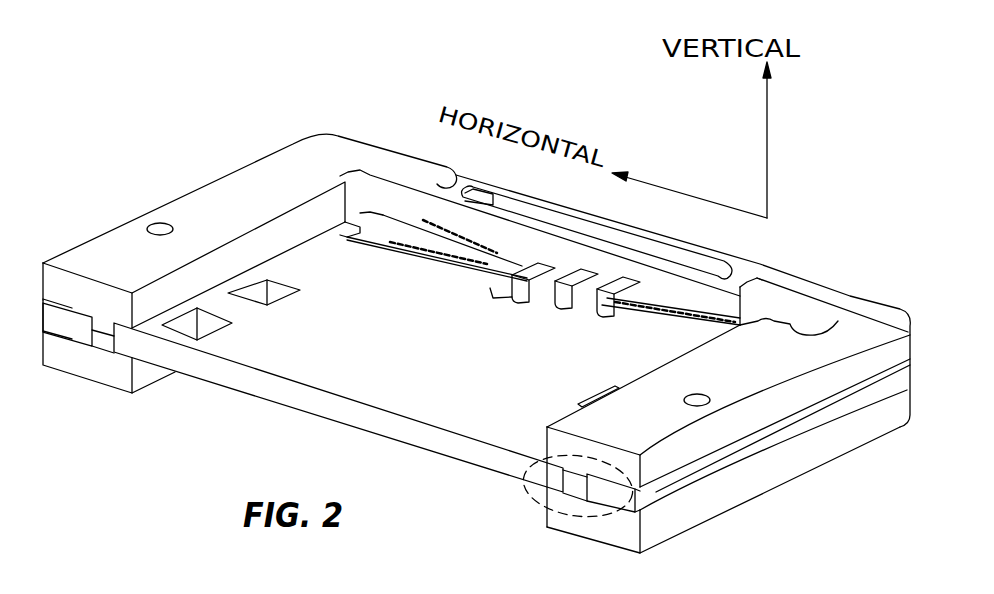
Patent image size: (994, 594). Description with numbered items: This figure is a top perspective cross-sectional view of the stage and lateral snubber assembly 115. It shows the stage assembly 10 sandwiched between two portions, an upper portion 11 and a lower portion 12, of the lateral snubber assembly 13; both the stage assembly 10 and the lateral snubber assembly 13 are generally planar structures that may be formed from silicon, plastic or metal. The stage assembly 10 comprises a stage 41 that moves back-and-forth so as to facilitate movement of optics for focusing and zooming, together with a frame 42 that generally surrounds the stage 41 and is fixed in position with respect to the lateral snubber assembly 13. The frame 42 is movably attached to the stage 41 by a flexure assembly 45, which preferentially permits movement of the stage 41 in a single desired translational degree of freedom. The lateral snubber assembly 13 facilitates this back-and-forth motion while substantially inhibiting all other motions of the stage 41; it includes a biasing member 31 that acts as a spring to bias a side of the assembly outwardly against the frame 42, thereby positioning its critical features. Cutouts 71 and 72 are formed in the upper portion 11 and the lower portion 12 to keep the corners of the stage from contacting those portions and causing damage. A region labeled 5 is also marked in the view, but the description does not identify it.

The stage and lateral snubber assembly 115 is at (330, 87).
The lateral snubber assembly 13 is at (45, 234).
The upper portion of lateral snubber assembly 11 is at (222, 192).
The cutout 71 is at (347, 172).
The flexure assembly 45 is at (470, 267).
The stage 41 is at (407, 362).
The biasing member 31 is at (648, 276).
The cutout 72 is at (805, 321).
The frame 42 is at (860, 402).
The lower portion of lateral snubber assembly 12 is at (768, 477).
The detail region 5 is at (530, 488).
The stage assembly 10 is at (208, 407).